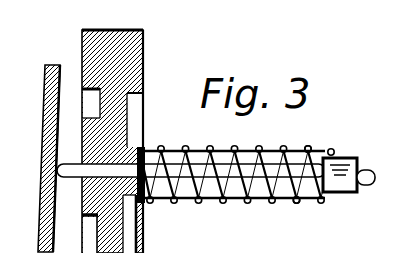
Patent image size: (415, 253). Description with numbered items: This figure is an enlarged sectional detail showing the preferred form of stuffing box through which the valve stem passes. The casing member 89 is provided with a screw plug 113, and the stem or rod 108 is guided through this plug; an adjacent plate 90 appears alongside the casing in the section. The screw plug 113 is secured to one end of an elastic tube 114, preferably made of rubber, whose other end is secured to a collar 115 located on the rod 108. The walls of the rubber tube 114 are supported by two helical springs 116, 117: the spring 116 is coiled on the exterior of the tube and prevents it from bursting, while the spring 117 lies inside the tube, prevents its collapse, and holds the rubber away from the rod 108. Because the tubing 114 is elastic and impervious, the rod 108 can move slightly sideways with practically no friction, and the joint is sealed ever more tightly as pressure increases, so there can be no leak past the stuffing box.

The casing member 89 is at (135, 20).
The side plate 90 is at (72, 50).
The stem or rod 108 is at (253, 199).
The screw plug 113 is at (118, 196).
The elastic tube 114 is at (183, 127).
The collar 115 is at (378, 139).
The helical spring 116 is at (320, 143).
The helical spring 117 is at (285, 201).